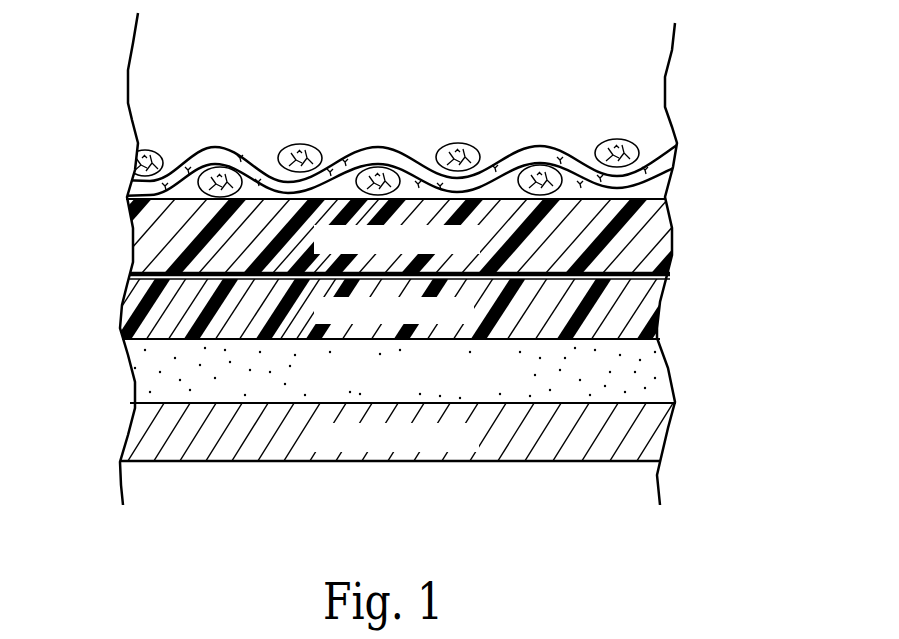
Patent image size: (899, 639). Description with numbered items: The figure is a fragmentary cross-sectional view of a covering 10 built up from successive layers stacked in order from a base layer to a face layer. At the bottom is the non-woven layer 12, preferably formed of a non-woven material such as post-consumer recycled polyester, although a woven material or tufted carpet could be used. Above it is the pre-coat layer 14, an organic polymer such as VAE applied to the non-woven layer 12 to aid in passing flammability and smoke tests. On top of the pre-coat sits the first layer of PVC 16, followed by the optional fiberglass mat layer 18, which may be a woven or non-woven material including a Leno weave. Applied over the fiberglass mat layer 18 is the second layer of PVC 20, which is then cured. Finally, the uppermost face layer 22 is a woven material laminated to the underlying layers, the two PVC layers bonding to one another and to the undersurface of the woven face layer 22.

The covering 10 is at (100, 241).
The non-woven layer 12 is at (207, 442).
The pre-coat layer 14 is at (150, 387).
The first layer of PVC 16 is at (133, 280).
The fiberglass mat layer 18 is at (664, 269).
The second layer of PVC 20 is at (638, 230).
The face layer 22 is at (127, 185).